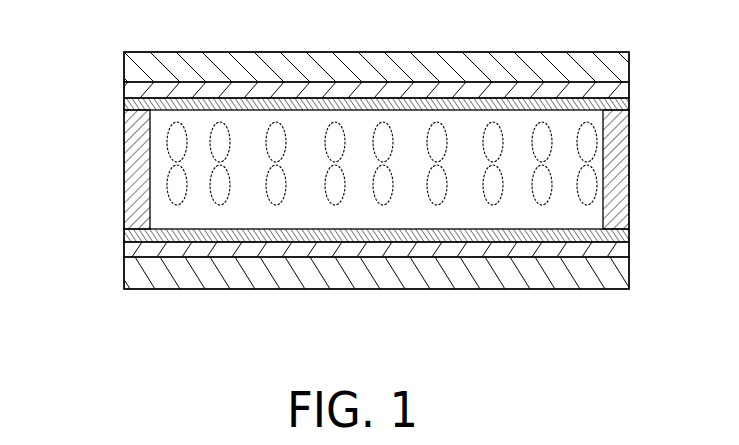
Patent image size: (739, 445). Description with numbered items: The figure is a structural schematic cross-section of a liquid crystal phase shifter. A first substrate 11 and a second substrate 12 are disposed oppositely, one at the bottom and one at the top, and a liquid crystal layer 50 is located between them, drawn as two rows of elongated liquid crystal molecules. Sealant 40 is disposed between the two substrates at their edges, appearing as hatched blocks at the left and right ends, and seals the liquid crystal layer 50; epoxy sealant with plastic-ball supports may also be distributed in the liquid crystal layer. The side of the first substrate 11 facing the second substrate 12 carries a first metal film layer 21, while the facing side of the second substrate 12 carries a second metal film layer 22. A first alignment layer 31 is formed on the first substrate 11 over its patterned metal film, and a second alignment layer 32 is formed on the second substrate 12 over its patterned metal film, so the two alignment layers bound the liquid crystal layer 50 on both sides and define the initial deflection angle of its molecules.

The first substrate 11 is at (382, 270).
The second substrate 12 is at (422, 62).
The first metal film layer 21 is at (513, 248).
The second metal film layer 22 is at (507, 92).
The first alignment layer 31 is at (266, 234).
The second alignment layer 32 is at (215, 107).
The sealant 40 is at (138, 140).
The liquid crystal layer 50 is at (220, 183).